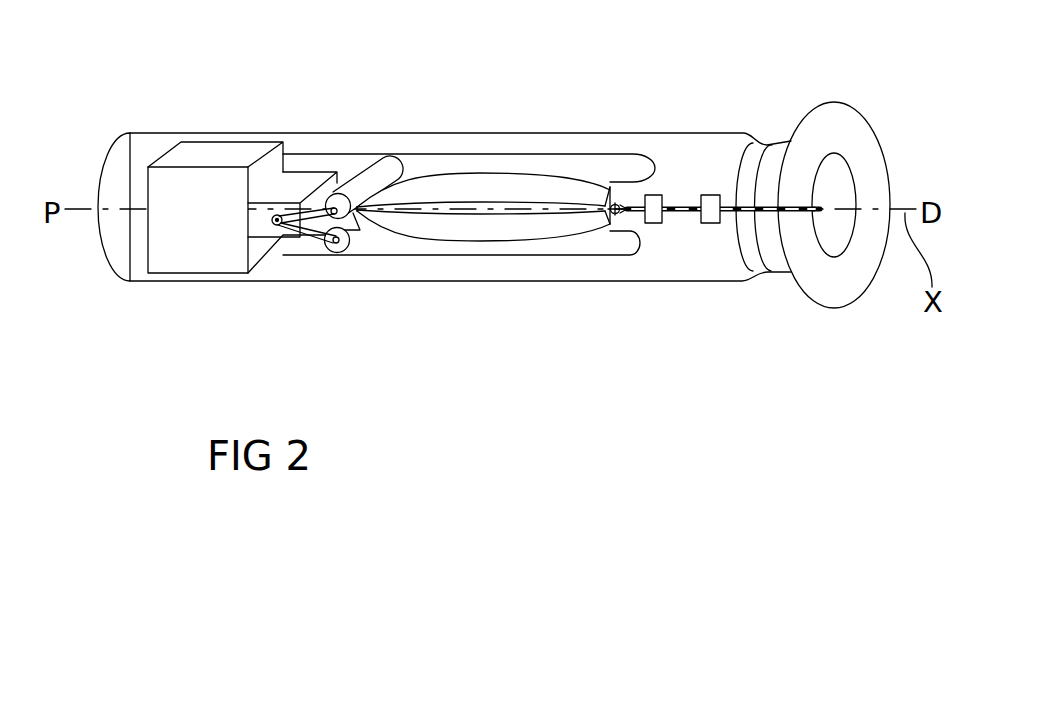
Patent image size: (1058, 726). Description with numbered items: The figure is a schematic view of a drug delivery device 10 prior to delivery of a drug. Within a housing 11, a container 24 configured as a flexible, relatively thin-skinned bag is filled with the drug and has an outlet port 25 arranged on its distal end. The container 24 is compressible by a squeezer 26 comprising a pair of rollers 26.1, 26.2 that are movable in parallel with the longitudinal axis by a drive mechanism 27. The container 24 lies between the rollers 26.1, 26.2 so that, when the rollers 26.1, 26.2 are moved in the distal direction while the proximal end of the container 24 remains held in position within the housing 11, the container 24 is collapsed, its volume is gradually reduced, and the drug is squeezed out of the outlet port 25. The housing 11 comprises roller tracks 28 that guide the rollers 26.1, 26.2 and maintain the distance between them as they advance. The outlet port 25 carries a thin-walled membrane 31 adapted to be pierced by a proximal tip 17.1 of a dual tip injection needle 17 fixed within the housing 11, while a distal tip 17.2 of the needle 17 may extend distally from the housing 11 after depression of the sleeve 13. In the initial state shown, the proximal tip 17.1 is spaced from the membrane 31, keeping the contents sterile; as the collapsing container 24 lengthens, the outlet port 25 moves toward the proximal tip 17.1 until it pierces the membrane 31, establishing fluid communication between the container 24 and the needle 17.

The drug delivery device 10 is at (130, 117).
The housing 11 is at (572, 140).
The sleeve 13 is at (853, 140).
The dual tip injection needle 17 is at (688, 200).
The proximal tip 17.1 is at (613, 222).
The distal tip 17.2 is at (820, 209).
The container 24 is at (497, 228).
The outlet port 25 is at (604, 238).
The squeezer 26 is at (293, 185).
The roller 26.1 is at (382, 163).
The roller 26.2 is at (353, 236).
The drive mechanism 27 is at (224, 158).
The roller tracks 28 is at (492, 165).
The membrane 31 is at (612, 190).